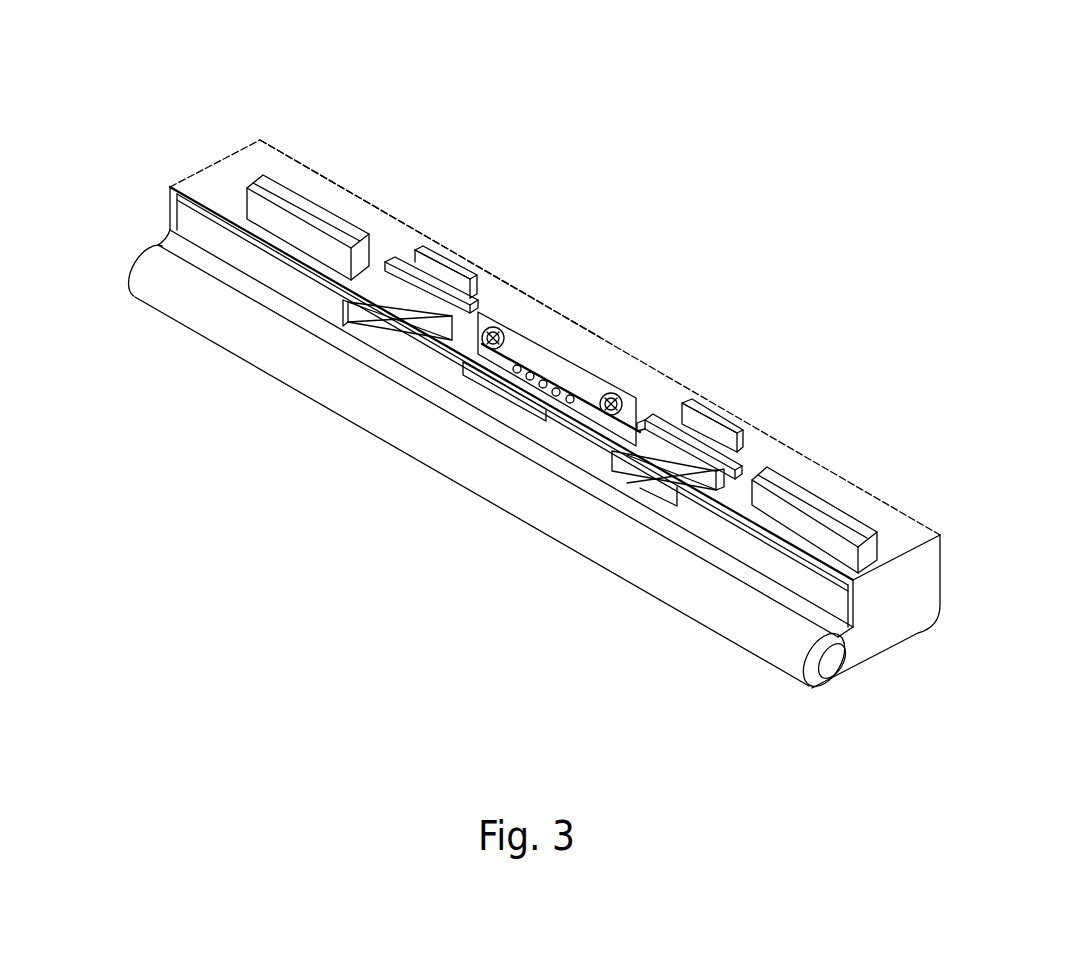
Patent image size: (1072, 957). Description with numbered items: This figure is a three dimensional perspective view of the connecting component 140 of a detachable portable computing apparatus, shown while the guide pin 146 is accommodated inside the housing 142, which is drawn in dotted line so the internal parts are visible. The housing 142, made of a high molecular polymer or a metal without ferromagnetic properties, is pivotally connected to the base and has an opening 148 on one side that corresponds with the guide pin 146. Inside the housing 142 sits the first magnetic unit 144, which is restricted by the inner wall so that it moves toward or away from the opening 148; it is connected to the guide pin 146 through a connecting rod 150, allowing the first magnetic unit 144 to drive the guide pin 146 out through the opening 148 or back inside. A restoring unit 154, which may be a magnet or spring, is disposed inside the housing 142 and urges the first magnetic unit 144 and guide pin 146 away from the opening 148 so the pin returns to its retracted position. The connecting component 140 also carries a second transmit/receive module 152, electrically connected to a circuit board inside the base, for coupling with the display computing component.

The connecting component 140 is at (1058, 111).
The housing 142 is at (260, 157).
The first magnetic unit 144 is at (303, 213).
The guide pin 146 is at (347, 315).
The opening 148 is at (617, 455).
The connecting rod 150 is at (383, 250).
The second transmit/receive module 152 is at (553, 367).
The restoring unit 154 is at (448, 257).